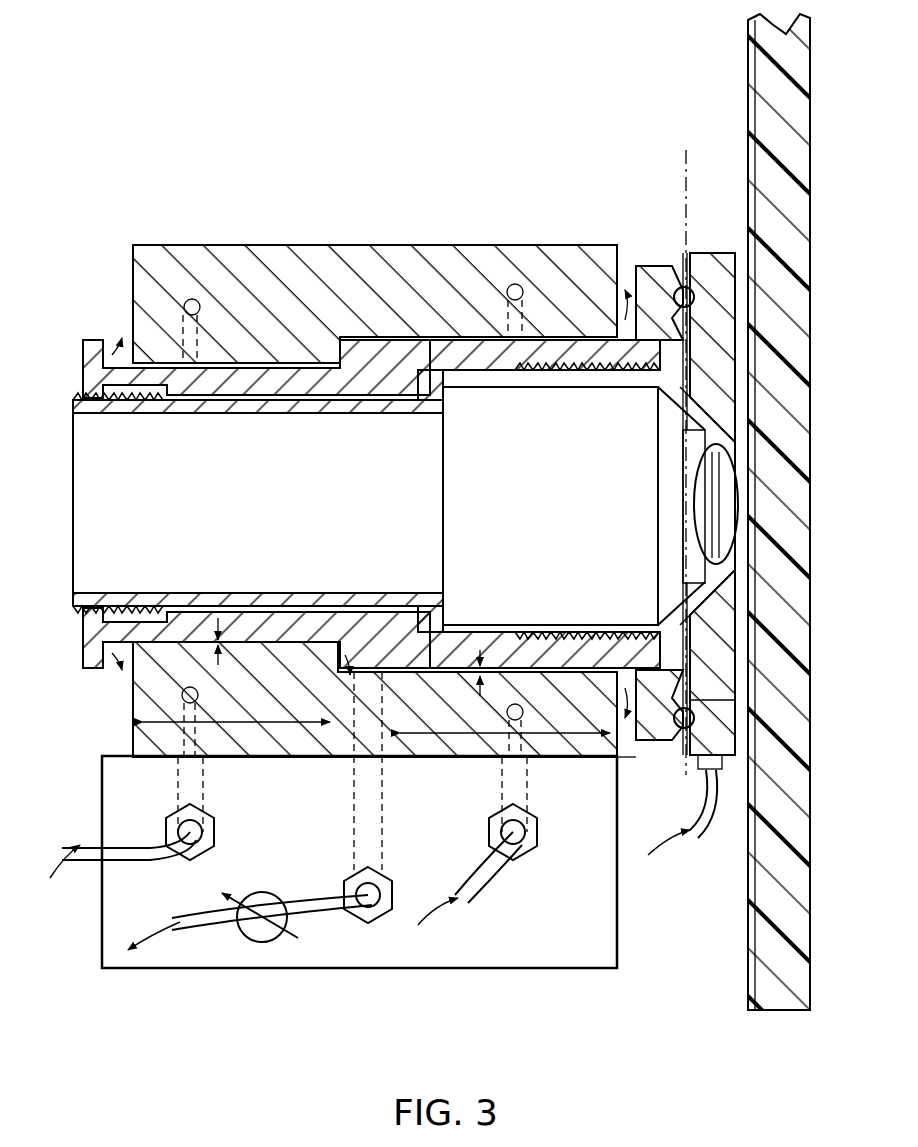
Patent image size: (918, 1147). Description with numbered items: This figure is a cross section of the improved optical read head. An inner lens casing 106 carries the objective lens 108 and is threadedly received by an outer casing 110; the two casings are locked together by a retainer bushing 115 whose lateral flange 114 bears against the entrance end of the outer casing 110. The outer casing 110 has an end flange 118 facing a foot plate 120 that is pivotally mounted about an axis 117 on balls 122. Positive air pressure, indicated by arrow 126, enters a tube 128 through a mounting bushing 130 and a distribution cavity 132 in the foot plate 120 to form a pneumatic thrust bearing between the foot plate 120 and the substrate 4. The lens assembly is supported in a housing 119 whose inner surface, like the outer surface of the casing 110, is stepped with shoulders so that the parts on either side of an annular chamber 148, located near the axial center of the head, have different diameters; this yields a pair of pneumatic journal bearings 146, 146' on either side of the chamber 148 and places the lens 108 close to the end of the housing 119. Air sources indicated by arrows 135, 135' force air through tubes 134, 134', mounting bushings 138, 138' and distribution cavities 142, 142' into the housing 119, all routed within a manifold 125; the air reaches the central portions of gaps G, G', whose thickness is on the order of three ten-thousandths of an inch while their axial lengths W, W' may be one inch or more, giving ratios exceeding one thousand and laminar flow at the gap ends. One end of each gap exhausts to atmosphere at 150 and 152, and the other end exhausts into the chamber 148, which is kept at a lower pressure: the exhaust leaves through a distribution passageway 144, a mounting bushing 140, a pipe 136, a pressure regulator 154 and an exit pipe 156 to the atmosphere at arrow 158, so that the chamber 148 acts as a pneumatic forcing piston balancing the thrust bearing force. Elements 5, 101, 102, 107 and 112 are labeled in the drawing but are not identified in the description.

The substrate 4 is at (770, 75).
The wall surface 5 is at (747, 120).
The wall opening 101 is at (735, 650).
The lens assembly 102 is at (97, 300).
The inner lens casing 106 is at (455, 630).
The housing tube extension 107 is at (445, 600).
The objective lens 108 is at (705, 480).
The outer lens casing 110 is at (540, 640).
The lower threaded sleeve 112 is at (560, 635).
The lateral flange 114 is at (90, 640).
The retainer bushing 115 is at (100, 600).
The axis 117 is at (686, 178).
The end flange 118 is at (668, 262).
The housing 119 is at (130, 715).
The foot plate 120 is at (735, 745).
The balls 122 is at (668, 745).
The manifold 125 is at (101, 950).
The arrow indicating source of positive air pressure 126 is at (655, 860).
The tube 128 is at (700, 825).
The mounting bushing 130 is at (700, 768).
The distribution cavity 132 is at (705, 650).
The tube 134 is at (125, 825).
The tube 134' is at (465, 867).
The arrow indicating source of positive air pressure 135 is at (76, 872).
The arrow indicating source of positive air pressure 135' is at (456, 927).
The pipe 136 is at (300, 880).
The mounting bushing 138 is at (225, 820).
The mounting bushing 138' is at (539, 847).
The mounting bushing 140 is at (350, 882).
The distribution cavity 142 is at (160, 565).
The distribution cavity 142' is at (549, 558).
The distribution passageway 144 is at (376, 783).
The pneumatic journal bearing 146 is at (256, 433).
The pneumatic journal bearing 146' is at (545, 427).
The annular chamber 148 is at (370, 395).
The exhaust to atmosphere 150 is at (628, 760).
The exhaust to atmosphere 152 is at (125, 670).
The pressure regulator 154 is at (248, 935).
The exit pipe 156 is at (190, 915).
The arrow indicating exhaust to atmosphere 158 is at (150, 938).
The gap G is at (230, 650).
The gap G' is at (493, 682).
The axial length of gap W is at (236, 724).
The axial length of gap W' is at (505, 735).